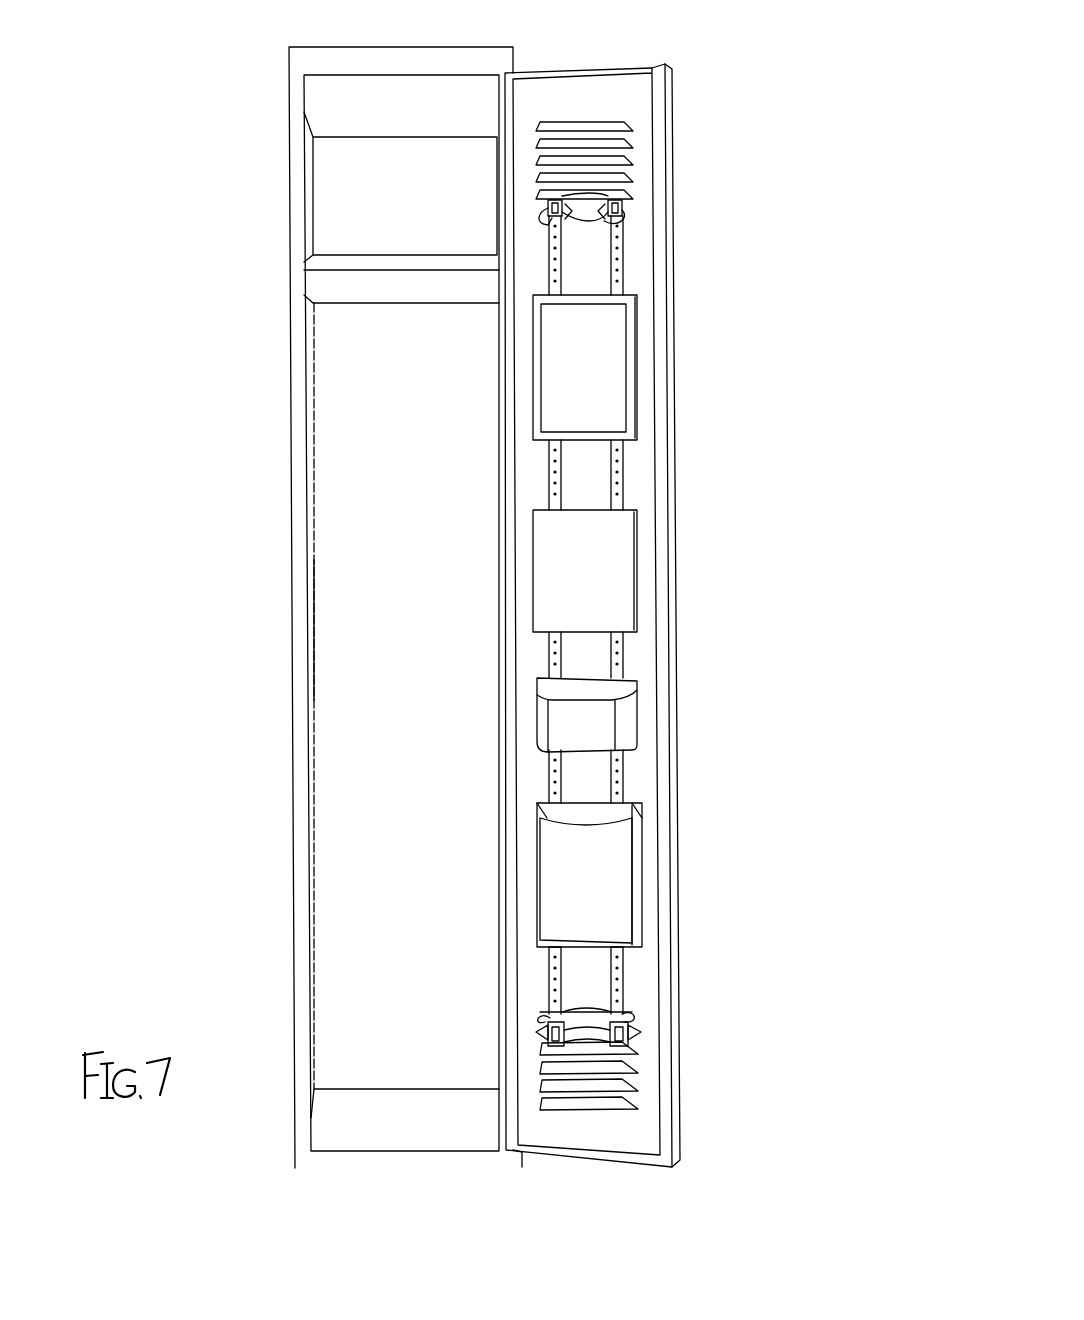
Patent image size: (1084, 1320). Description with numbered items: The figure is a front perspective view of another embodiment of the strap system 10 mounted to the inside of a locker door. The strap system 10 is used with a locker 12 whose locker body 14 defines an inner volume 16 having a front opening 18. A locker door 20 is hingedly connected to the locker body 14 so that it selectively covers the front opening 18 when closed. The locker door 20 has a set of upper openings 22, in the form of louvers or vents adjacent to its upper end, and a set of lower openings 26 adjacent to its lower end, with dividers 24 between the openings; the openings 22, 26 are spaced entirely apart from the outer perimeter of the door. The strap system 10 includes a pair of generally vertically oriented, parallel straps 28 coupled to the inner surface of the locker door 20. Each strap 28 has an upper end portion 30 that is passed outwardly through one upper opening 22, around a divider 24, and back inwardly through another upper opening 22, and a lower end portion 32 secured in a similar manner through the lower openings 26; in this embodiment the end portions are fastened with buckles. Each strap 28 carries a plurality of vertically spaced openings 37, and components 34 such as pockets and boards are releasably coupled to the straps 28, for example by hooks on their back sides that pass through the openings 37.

The strap system 10 is at (641, 763).
The locker 12 is at (315, 742).
The locker body 14 is at (313, 345).
The inner volume 16 is at (352, 448).
The front opening 18 is at (372, 523).
The locker door 20 is at (640, 467).
The upper openings 22 is at (588, 122).
The dividers 24 is at (608, 147).
The lower openings 26 is at (625, 1070).
The straps 28 is at (558, 962).
The upper end portion 30 is at (617, 218).
The lower end portion 32 is at (628, 1030).
The components 34 is at (615, 385).
The openings 37 is at (628, 270).